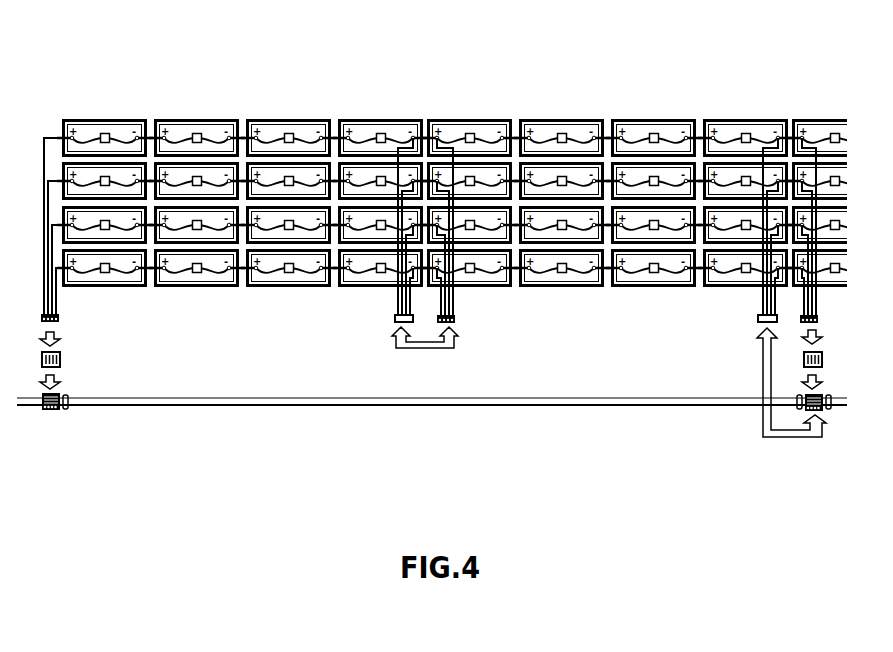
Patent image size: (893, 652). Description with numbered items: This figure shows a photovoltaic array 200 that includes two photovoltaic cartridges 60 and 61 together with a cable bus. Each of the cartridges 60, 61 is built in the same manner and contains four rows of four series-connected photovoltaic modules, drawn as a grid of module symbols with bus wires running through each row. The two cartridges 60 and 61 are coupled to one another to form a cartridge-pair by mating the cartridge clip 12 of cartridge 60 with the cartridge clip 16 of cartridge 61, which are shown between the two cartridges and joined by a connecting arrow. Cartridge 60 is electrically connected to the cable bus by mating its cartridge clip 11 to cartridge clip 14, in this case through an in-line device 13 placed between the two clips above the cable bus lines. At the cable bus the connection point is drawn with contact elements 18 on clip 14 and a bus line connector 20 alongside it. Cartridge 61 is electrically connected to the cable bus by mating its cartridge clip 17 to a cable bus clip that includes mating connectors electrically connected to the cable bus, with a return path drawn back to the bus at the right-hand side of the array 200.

The photovoltaic array 200 is at (90, 70).
The photovoltaic cartridge 60 is at (405, 112).
The photovoltaic cartridge 61 is at (785, 111).
The cartridge clip 11 is at (38, 317).
The cartridge clip 12 is at (396, 316).
The in-line device 13 is at (40, 355).
The cartridge clip 14 is at (42, 397).
The cartridge clip 16 is at (455, 317).
The cartridge clip 17 is at (761, 316).
The contact terminals 18 is at (44, 410).
The bus line connector 20 is at (70, 410).